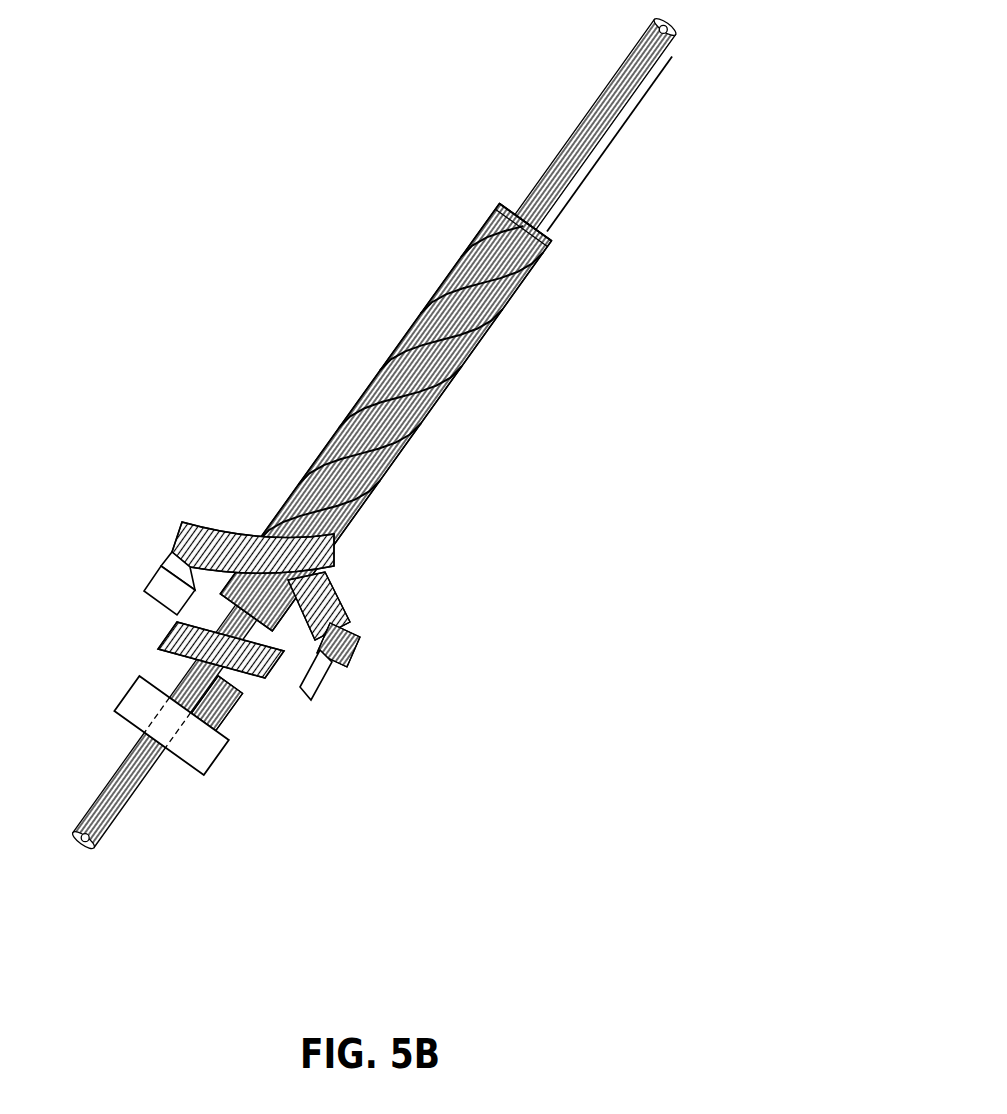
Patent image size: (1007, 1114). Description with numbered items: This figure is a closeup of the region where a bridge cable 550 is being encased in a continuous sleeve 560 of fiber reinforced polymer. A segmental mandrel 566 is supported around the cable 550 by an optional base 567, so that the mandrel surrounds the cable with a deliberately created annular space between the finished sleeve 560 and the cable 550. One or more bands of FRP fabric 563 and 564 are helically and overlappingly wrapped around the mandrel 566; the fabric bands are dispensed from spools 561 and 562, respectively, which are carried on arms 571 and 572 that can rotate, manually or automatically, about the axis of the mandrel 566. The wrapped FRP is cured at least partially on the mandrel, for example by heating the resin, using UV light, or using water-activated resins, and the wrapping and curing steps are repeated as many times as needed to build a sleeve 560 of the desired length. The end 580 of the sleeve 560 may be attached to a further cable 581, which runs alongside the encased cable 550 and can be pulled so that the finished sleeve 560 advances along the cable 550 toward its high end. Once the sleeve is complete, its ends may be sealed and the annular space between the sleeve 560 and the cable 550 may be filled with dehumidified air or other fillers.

The cable 550 is at (540, 178).
The continuous sleeve 560 is at (433, 333).
The spool 561 is at (347, 658).
The spool 562 is at (192, 545).
The band of FRP fabric 563 is at (317, 607).
The band of FRP fabric 564 is at (217, 540).
The segmental mandrel 566 is at (200, 693).
The base 567 is at (203, 737).
The arm 571 is at (300, 690).
The arm 572 is at (178, 603).
The end of the sleeve 580 is at (520, 216).
The cable 581 is at (610, 140).